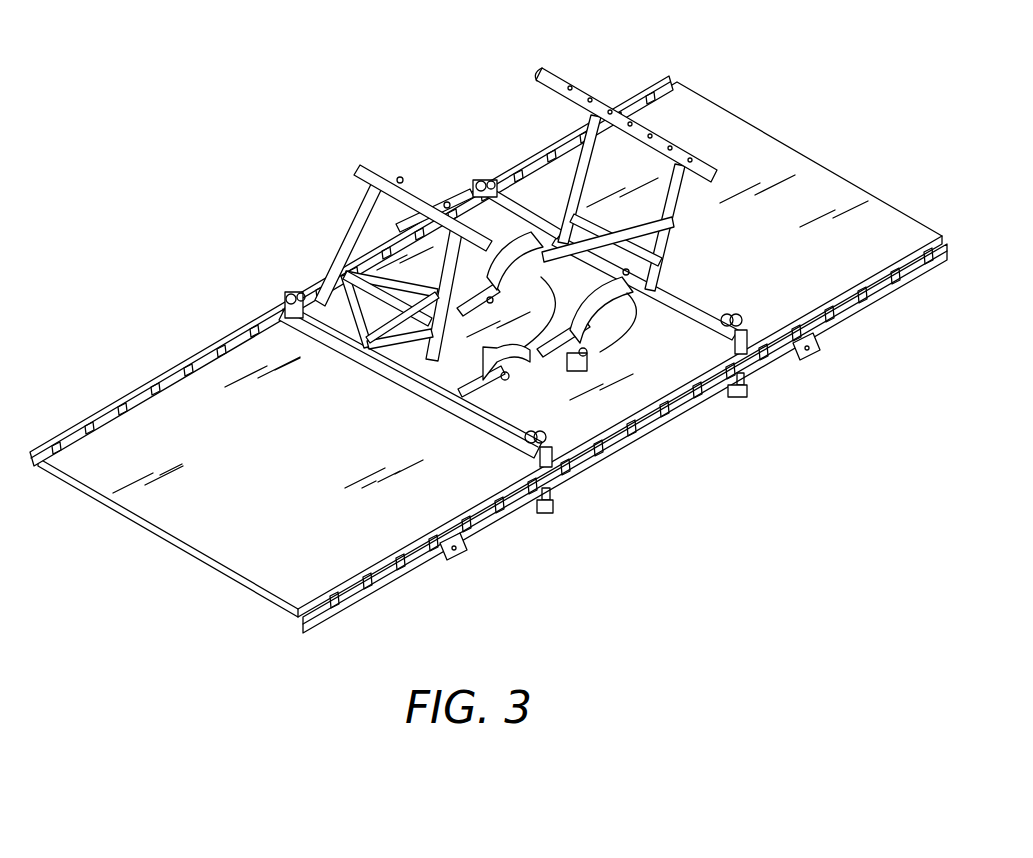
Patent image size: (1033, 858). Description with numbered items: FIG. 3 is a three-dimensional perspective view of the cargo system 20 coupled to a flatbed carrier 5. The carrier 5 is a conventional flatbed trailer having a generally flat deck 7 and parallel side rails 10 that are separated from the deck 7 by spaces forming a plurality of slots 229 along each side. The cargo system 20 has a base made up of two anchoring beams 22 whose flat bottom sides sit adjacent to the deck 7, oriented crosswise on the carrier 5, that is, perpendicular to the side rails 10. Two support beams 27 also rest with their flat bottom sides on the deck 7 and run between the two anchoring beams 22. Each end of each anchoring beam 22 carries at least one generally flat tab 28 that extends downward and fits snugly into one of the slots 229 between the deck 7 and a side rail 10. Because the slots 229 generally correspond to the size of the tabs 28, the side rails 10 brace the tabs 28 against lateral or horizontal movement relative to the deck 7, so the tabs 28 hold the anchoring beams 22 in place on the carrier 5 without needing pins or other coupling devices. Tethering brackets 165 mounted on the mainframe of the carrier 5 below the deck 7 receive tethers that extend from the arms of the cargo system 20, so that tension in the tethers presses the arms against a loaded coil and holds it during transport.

The flatbed carrier 5 is at (488, 323).
The deck 7 is at (168, 513).
The side rails 10 is at (488, 354).
The cargo system 20 is at (541, 274).
The anchoring beams 22 is at (503, 421).
The support beams 27 is at (545, 262).
The tabs 28 is at (556, 460).
The tethering brackets 165 is at (467, 547).
The slots 229 is at (240, 335).